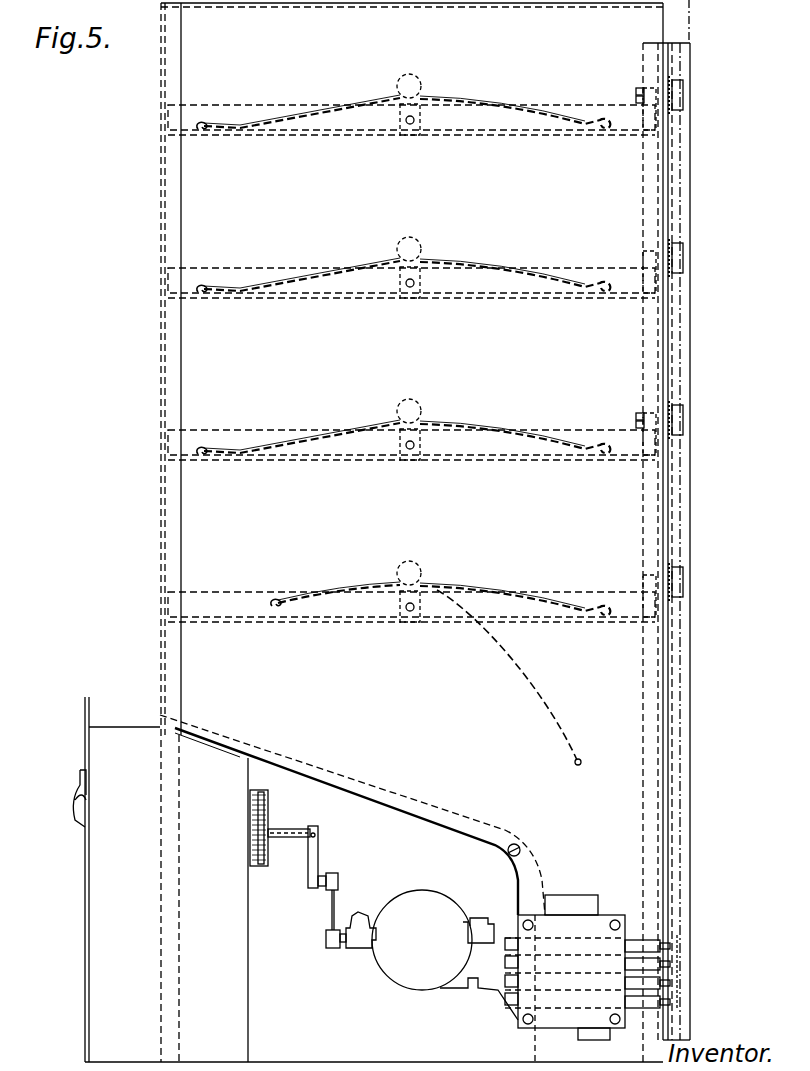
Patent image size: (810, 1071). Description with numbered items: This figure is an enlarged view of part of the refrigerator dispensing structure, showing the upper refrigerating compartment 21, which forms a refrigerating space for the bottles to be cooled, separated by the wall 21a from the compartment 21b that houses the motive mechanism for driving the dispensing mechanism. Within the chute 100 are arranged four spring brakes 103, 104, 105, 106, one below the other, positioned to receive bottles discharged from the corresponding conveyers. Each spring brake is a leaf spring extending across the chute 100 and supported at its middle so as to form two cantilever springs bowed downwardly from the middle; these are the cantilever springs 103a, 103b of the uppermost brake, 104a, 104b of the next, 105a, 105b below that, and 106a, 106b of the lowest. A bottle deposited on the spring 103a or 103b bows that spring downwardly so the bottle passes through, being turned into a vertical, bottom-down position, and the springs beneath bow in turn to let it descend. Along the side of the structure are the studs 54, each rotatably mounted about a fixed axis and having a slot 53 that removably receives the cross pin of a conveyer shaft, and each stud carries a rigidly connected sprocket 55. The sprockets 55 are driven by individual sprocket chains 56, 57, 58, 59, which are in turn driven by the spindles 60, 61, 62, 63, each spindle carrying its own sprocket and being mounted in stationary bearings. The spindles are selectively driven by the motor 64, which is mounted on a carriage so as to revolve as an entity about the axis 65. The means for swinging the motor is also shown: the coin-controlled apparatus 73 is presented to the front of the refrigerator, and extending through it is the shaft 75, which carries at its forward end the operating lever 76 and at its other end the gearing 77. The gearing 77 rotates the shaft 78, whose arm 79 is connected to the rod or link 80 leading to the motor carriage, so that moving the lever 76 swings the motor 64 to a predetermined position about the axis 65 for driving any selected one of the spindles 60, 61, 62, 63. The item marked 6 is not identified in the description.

The chute 100 is at (186, 75).
The spring brake 103 is at (411, 113).
The cantilever spring 103a is at (318, 104).
The cantilever spring 103b is at (515, 108).
The spring brake 104 is at (411, 277).
The cantilever spring 104a is at (300, 268).
The cantilever spring 104b is at (512, 271).
The spring brake 105 is at (411, 440).
The cantilever spring 105a is at (330, 429).
The cantilever spring 105b is at (518, 433).
The spring brake 106 is at (411, 659).
The cantilever spring 106a is at (330, 592).
The cantilever spring 106b is at (500, 595).
The slot 53 is at (636, 92).
The stud 54 is at (645, 88).
The sprocket 55 is at (683, 119).
The sprocket chain 56 is at (680, 187).
The sprocket chain 57 is at (676, 320).
The sprocket chain 58 is at (680, 500).
The refrigerating compartment 21 is at (200, 665).
The wall 21a is at (380, 805).
The compartment 21b is at (410, 830).
The coin-controlled apparatus 73 is at (96, 882).
The operating lever 76 is at (78, 792).
The gearing 77 is at (250, 826).
The shaft 75 is at (262, 800).
The shaft 78 is at (286, 828).
The arm 79 is at (318, 855).
The rod or link 80 is at (340, 896).
The motor 64 is at (425, 892).
The axis 65 is at (600, 975).
The spindle 60 is at (668, 944).
The spindle 61 is at (668, 962).
The spindle 62 is at (668, 981).
The spindle 63 is at (668, 1000).
The sprocket chain 59 is at (680, 978).
The frame post 6 is at (690, 1033).